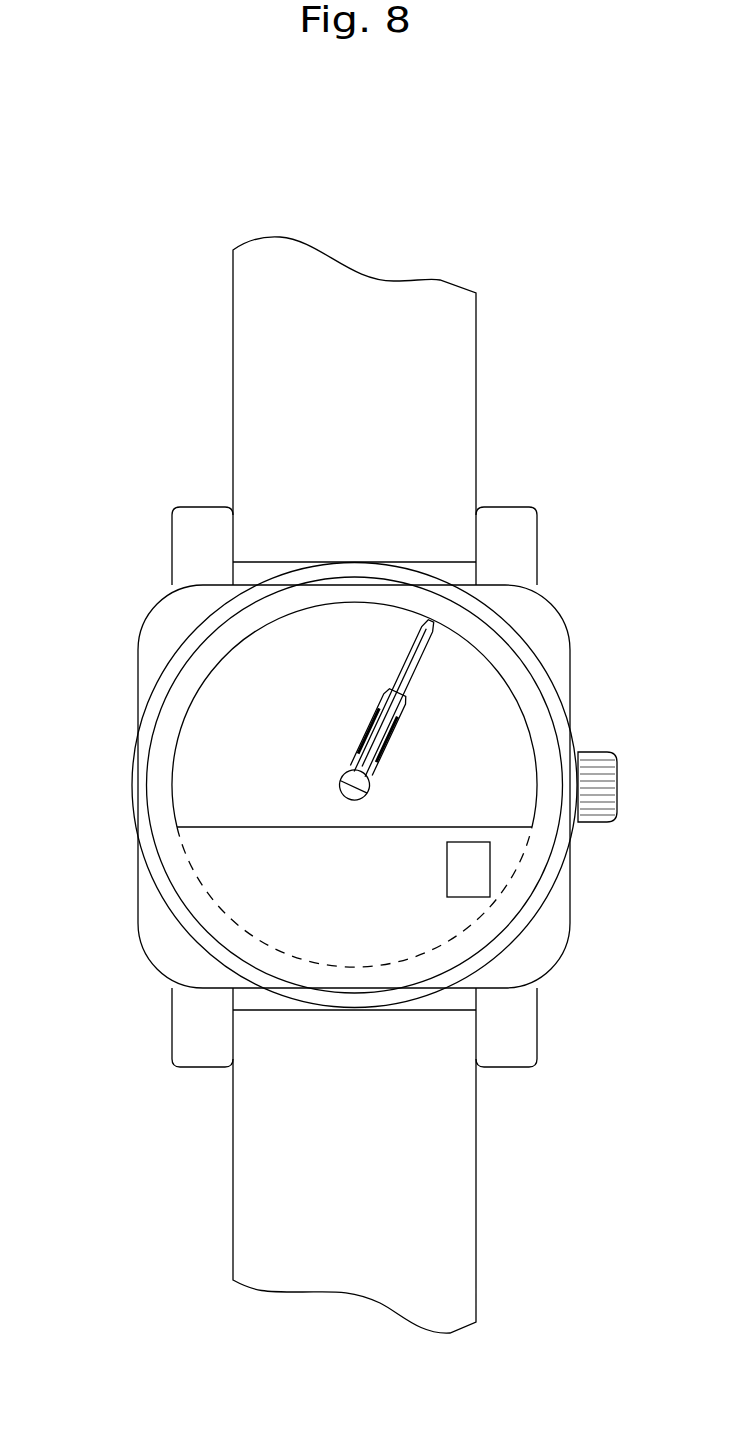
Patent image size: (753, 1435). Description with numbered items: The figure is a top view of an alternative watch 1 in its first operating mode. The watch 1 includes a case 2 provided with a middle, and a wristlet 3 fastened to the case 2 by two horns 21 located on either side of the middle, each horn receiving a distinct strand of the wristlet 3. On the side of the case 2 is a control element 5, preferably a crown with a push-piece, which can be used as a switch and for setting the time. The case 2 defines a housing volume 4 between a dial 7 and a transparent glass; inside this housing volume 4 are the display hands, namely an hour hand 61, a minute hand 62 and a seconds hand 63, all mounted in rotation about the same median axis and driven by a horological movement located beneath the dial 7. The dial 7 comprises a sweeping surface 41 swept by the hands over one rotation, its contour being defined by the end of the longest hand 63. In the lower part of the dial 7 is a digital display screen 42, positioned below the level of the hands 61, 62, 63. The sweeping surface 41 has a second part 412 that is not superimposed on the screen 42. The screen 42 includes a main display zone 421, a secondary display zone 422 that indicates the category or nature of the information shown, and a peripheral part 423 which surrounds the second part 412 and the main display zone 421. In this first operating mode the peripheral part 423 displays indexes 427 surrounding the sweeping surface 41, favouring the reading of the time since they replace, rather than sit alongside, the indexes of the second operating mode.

The watch 1 is at (636, 334).
The case 2 is at (138, 770).
The wristlet 3 is at (288, 411).
The housing volume 4 is at (522, 754).
The control element 5 is at (607, 785).
The dial 7 is at (445, 695).
The horns 21 is at (202, 525).
The sweeping surface 41 is at (393, 963).
The digital display screen 42 is at (515, 843).
The hour hand 61 is at (352, 745).
The minute hand 62 is at (375, 700).
The seconds hand 63 is at (410, 667).
The second part 412 is at (228, 787).
The main display zone 421 is at (227, 843).
The secondary display zone 422 is at (462, 897).
The peripheral part 423 is at (537, 718).
The indexes 427 is at (248, 953).